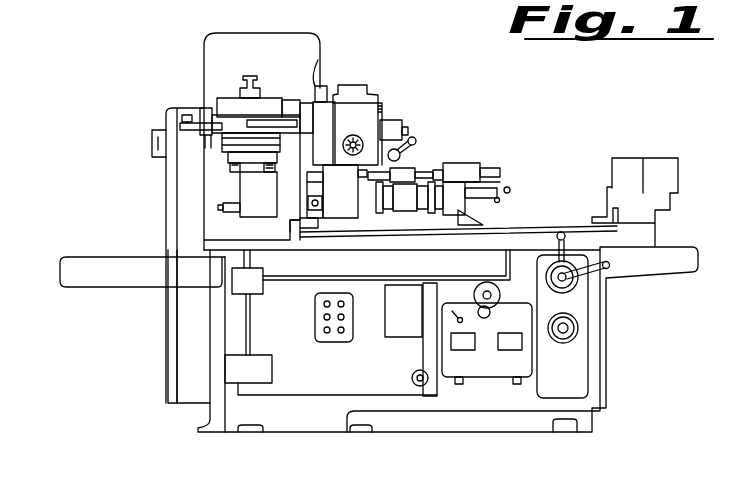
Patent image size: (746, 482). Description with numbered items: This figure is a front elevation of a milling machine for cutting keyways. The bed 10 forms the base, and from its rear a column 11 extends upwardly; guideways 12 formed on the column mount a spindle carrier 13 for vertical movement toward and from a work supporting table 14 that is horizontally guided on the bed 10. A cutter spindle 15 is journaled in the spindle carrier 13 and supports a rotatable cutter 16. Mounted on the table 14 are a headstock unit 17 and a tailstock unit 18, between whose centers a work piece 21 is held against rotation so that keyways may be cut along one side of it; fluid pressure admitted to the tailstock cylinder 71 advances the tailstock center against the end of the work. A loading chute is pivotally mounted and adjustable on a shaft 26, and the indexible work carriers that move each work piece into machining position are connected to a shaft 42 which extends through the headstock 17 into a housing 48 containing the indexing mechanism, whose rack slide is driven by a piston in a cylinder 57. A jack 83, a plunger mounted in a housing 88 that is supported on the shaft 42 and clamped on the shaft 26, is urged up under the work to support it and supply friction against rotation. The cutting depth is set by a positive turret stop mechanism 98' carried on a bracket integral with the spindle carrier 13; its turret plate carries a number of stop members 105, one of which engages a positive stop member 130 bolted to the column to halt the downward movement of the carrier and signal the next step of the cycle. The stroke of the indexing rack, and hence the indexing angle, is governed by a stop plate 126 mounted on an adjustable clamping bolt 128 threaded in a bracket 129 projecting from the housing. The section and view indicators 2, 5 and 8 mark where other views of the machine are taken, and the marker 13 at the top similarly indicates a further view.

The section line 2- 2 is at (32, 110).
The section line 5- 5 is at (533, 125).
The view direction 8 is at (250, 73).
The bed 10 is at (306, 426).
The column 11 is at (321, 34).
The guideways 12 is at (325, 58).
The spindle carrier 13 is at (377, 103).
The work supporting table 14 is at (648, 237).
The cutter spindle 15 is at (365, 147).
The cutter 16 is at (352, 133).
The headstock unit 17 is at (347, 223).
The tailstock unit 18 is at (450, 226).
The work piece 21 is at (427, 171).
The shaft 26 is at (487, 197).
The shaft 42 is at (509, 188).
The housing 48 is at (310, 180).
The cylinder 57 is at (322, 203).
The cylinder 71 is at (488, 168).
The jack 83 is at (407, 178).
The housing 88 is at (420, 203).
The positive turret stop mechanism 98' is at (238, 148).
The stop members 105 is at (240, 163).
The stop plate 126 is at (180, 125).
The adjustable clamping bolt 128 is at (183, 114).
The bracket 129 is at (194, 150).
The positive stop member 130 is at (272, 210).